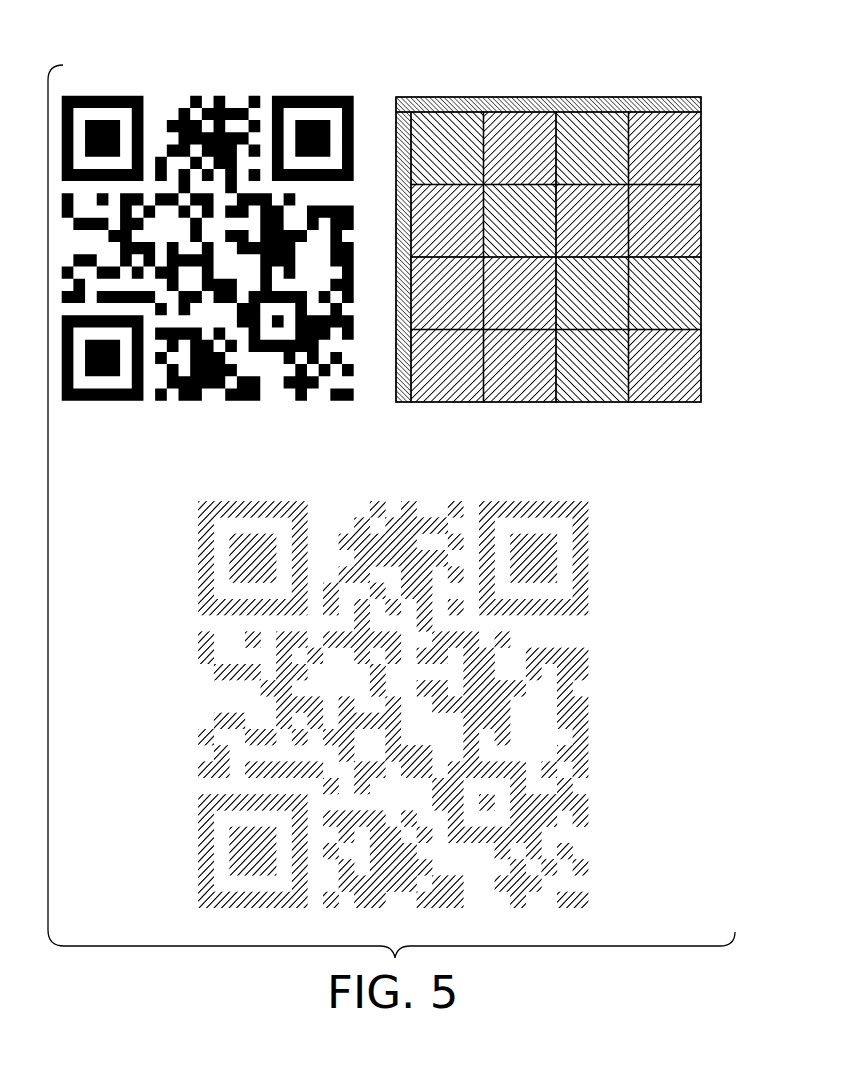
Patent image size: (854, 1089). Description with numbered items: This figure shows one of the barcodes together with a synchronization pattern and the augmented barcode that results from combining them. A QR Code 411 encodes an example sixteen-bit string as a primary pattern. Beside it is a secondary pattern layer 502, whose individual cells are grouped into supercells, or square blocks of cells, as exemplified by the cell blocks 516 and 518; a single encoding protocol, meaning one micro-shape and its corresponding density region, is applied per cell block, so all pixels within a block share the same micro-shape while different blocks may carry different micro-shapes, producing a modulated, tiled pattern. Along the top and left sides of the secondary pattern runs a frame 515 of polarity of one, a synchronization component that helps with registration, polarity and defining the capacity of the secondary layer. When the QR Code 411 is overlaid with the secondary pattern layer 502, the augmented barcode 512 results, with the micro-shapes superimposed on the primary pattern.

The QR Code 411 is at (207, 87).
The secondary pattern layer 502 is at (543, 241).
The augmented barcode 512 is at (288, 492).
The synchronization frame 515 is at (625, 97).
The cell block 516 is at (590, 403).
The cell block 518 is at (662, 403).